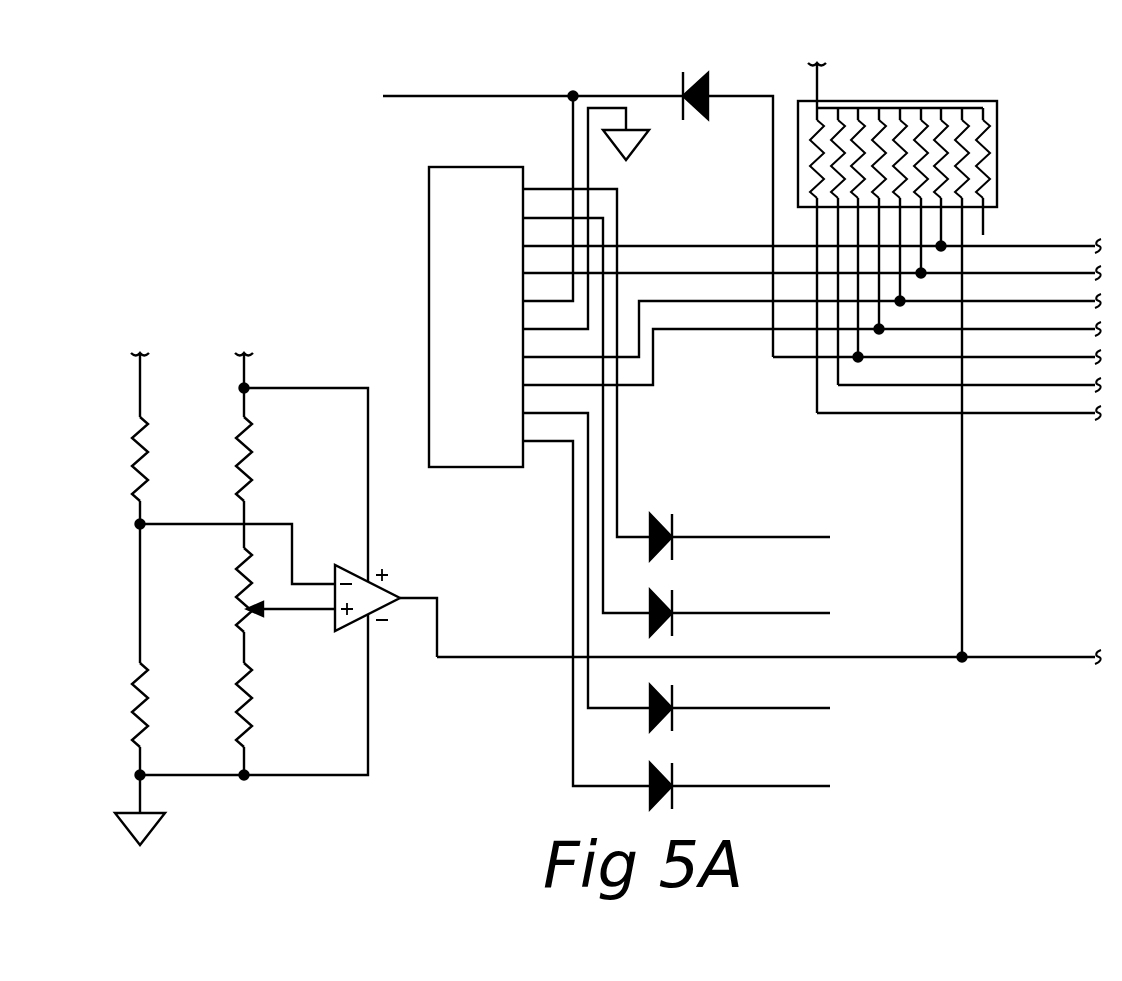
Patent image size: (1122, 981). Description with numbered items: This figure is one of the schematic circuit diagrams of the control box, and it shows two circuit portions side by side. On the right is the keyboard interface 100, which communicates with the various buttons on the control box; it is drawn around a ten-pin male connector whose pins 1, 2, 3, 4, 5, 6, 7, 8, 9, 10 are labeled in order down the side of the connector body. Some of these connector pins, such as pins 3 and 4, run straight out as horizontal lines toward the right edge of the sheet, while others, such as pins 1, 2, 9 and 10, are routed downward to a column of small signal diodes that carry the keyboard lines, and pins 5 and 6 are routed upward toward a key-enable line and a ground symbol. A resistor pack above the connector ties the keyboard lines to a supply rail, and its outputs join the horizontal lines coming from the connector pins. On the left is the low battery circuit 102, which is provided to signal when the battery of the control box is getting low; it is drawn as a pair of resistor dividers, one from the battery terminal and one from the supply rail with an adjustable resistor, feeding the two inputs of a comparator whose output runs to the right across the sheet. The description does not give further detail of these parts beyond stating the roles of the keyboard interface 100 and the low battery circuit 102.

The keyboard interface 100 is at (709, 424).
The low battery circuit 102 is at (296, 333).
The connector J4 pin 1 is at (586, 351).
The connector J4 pin 2 is at (586, 403).
The connector J4 pin 3 is at (809, 234).
The connector J4 pin 4 is at (809, 261).
The connector J4 pin 5 is at (548, 199).
The connector J4 pin 6 is at (574, 219).
The connector J4 pin 7 is at (809, 329).
The connector J4 pin 8 is at (809, 357).
The connector J4 pin 9 is at (586, 548).
The connector J4 pin 10 is at (586, 601).